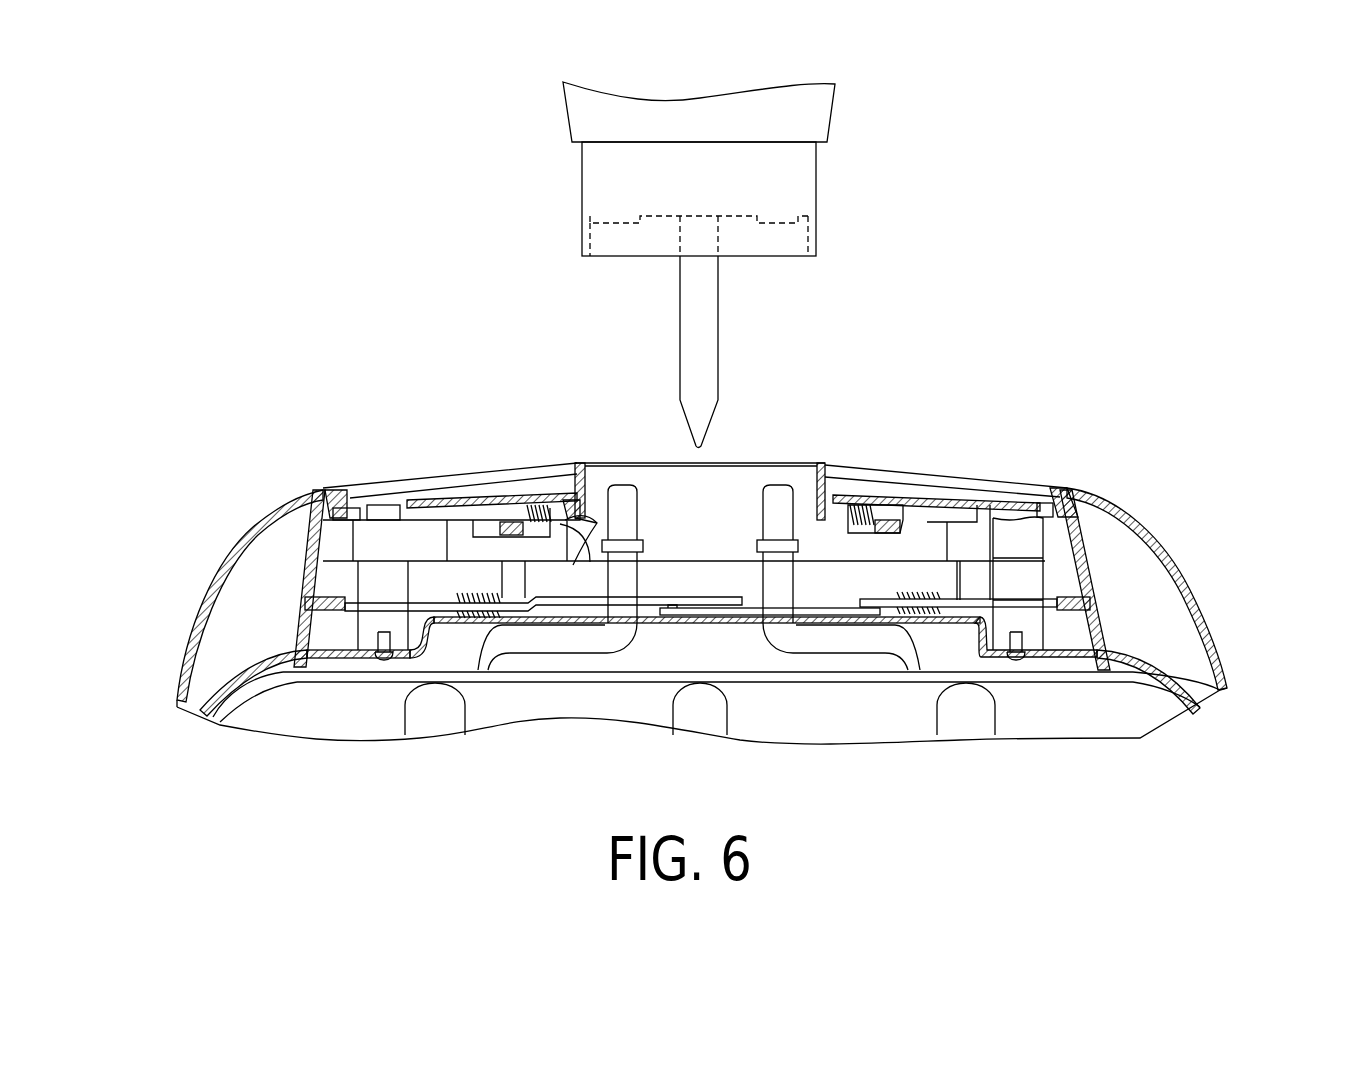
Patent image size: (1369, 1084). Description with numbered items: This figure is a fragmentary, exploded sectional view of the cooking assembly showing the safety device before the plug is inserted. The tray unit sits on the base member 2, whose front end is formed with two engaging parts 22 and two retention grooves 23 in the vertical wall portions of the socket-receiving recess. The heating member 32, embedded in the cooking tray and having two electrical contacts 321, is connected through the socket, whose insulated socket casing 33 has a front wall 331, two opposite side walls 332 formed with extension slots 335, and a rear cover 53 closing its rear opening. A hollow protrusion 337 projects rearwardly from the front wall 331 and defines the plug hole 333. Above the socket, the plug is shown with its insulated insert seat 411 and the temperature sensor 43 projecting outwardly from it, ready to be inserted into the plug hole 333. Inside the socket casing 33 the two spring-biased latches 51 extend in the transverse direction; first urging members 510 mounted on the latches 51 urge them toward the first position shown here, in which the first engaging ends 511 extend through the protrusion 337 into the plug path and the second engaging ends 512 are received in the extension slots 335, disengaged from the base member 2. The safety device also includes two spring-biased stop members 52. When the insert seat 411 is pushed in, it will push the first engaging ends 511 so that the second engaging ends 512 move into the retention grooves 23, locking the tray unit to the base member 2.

The base member 2 is at (220, 537).
The engaging parts 22 is at (338, 600).
The retention grooves 23 is at (1087, 528).
The heating member 32 is at (560, 645).
The socket casing 33 is at (1044, 463).
The temperature sensor 43 is at (707, 337).
The latches 51 is at (492, 500).
The stop members 52 is at (447, 618).
The rear cover 53 is at (1043, 658).
The electrical contacts 321 is at (610, 497).
The front wall 331 is at (458, 495).
The side walls 332 is at (310, 587).
The plug hole 333 is at (919, 482).
The extension slots 335 is at (1093, 557).
The hollow protrusion 337 is at (543, 450).
The insert seat 411 is at (803, 188).
The first urging members 510 is at (528, 503).
The first engaging ends 511 is at (583, 535).
The second engaging ends 512 is at (337, 540).